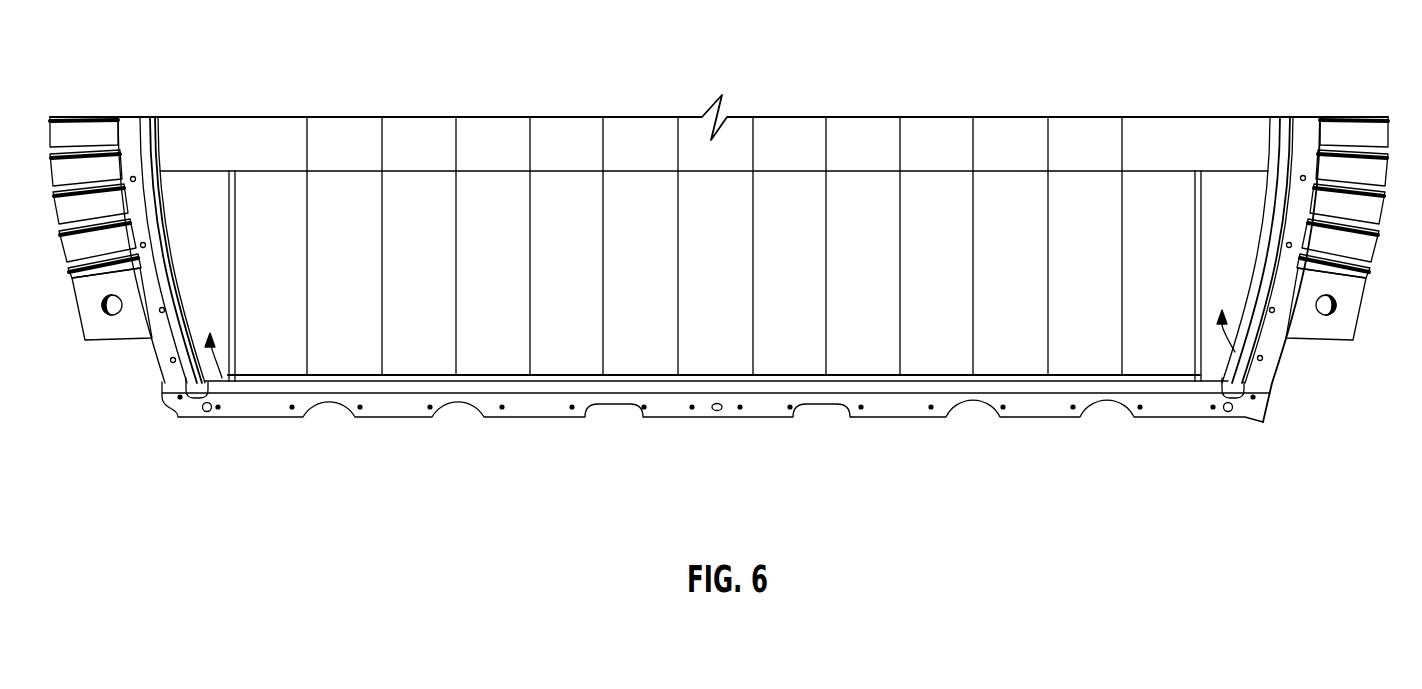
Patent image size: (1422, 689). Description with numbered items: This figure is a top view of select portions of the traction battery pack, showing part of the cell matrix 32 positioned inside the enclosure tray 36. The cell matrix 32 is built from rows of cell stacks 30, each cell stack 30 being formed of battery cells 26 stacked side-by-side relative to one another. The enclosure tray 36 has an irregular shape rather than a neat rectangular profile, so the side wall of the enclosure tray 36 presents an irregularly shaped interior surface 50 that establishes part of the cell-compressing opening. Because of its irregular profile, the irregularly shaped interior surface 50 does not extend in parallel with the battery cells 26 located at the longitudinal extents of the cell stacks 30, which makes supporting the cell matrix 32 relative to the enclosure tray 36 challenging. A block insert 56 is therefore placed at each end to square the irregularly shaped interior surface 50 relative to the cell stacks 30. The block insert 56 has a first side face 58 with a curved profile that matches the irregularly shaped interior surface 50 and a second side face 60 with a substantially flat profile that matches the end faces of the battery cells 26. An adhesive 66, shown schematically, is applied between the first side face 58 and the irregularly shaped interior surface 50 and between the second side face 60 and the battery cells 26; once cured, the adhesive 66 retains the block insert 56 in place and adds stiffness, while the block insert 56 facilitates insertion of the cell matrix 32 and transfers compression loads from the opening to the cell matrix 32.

The battery cells 26 is at (193, 131).
The cell stack 30 is at (800, 118).
The cell matrix 32 is at (1245, 105).
The enclosure tray 36 is at (1327, 133).
The irregularly shaped interior surface 50 is at (182, 316).
The block insert 56 is at (200, 383).
The first side face 58 is at (170, 208).
The second side face 60 is at (234, 233).
The adhesive 66 is at (188, 284).